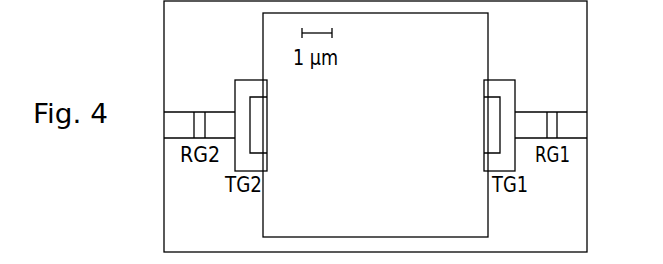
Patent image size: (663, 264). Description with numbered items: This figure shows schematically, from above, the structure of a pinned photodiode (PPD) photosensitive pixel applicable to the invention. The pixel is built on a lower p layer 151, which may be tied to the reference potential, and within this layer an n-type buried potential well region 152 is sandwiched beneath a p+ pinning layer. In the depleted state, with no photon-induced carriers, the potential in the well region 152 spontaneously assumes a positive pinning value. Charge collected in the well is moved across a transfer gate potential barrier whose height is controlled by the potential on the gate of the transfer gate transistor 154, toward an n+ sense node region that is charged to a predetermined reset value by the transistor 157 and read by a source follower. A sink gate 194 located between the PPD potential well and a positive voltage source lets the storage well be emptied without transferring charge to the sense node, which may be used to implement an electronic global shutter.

The lower p layer 151 is at (585, 244).
The n-type buried potential well region 152 is at (483, 231).
The transfer gate transistor 154 is at (505, 80).
The transistor 157 is at (552, 110).
The sink gate 194 is at (242, 80).